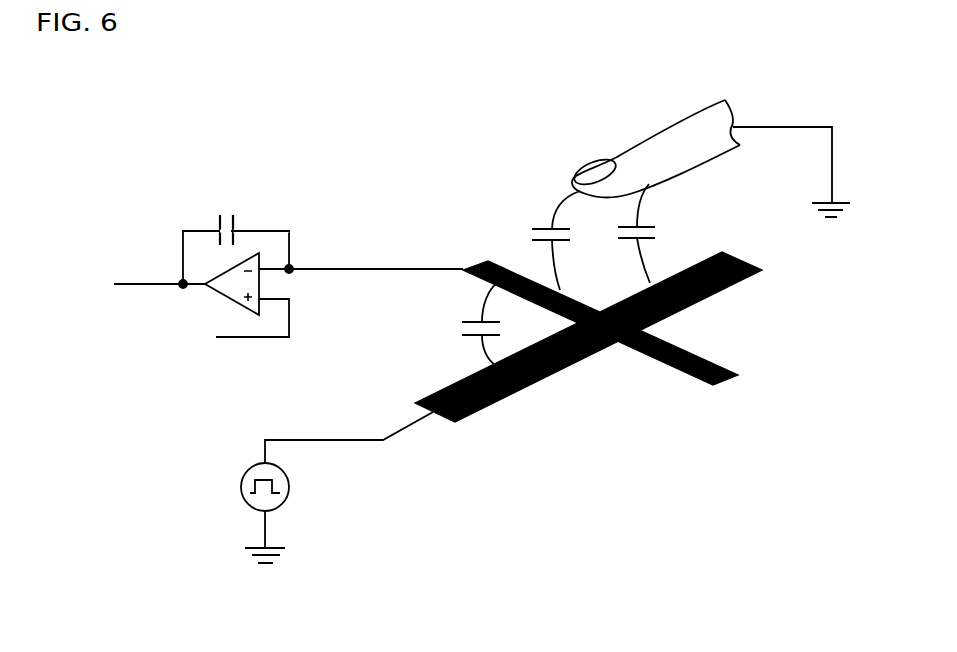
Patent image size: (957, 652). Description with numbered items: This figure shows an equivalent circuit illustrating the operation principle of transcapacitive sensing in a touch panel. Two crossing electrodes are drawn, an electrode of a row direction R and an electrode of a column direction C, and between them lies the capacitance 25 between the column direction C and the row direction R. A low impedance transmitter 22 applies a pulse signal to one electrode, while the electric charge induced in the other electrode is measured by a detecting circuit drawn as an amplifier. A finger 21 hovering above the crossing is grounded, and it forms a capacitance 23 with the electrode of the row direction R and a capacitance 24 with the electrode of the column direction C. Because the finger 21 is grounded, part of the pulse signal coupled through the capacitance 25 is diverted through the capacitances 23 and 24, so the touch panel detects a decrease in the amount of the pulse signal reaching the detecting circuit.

The finger 21 is at (653, 150).
The low impedance transmitter 22 is at (245, 470).
The capacitance between finger and row-direction electrode 23 is at (532, 232).
The capacitance between finger and column-direction electrode 24 is at (652, 232).
The capacitance between column direction and row direction 25 is at (462, 328).
The electrode of a row direction R is at (562, 366).
The electrode of a column direction C is at (692, 370).